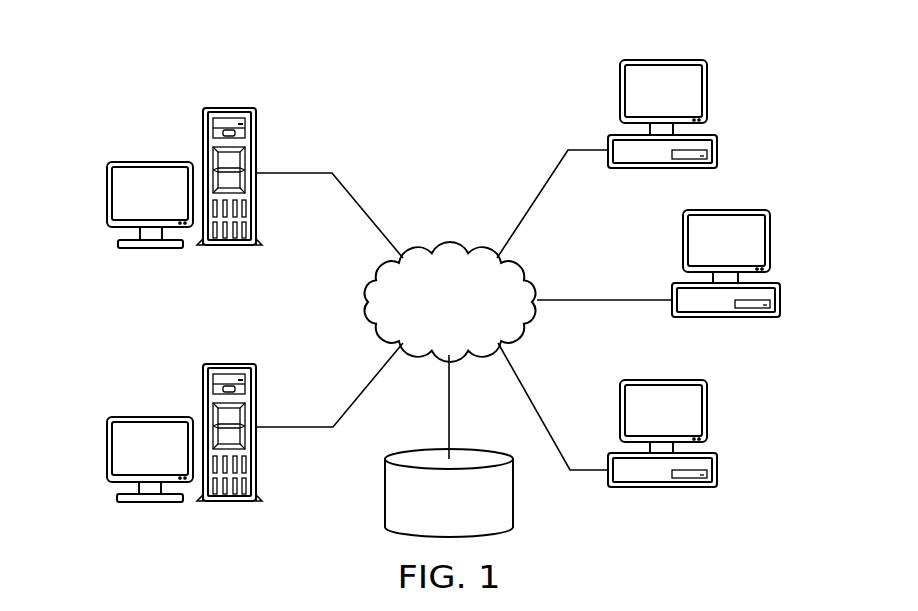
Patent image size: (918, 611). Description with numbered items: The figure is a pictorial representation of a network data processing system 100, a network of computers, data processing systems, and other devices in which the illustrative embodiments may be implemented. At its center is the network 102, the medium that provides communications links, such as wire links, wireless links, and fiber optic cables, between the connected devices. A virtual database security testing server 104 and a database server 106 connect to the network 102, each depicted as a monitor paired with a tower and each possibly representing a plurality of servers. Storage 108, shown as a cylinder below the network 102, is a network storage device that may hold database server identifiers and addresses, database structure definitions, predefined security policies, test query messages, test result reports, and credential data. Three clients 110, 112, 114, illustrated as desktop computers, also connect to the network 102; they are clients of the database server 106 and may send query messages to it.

The network data processing system 100 is at (324, 78).
The network 102 is at (425, 253).
The virtual database security testing server 104 is at (107, 193).
The database server 106 is at (107, 450).
The storage 108 is at (385, 491).
The client 110 is at (717, 140).
The client 112 is at (780, 308).
The client 114 is at (717, 478).